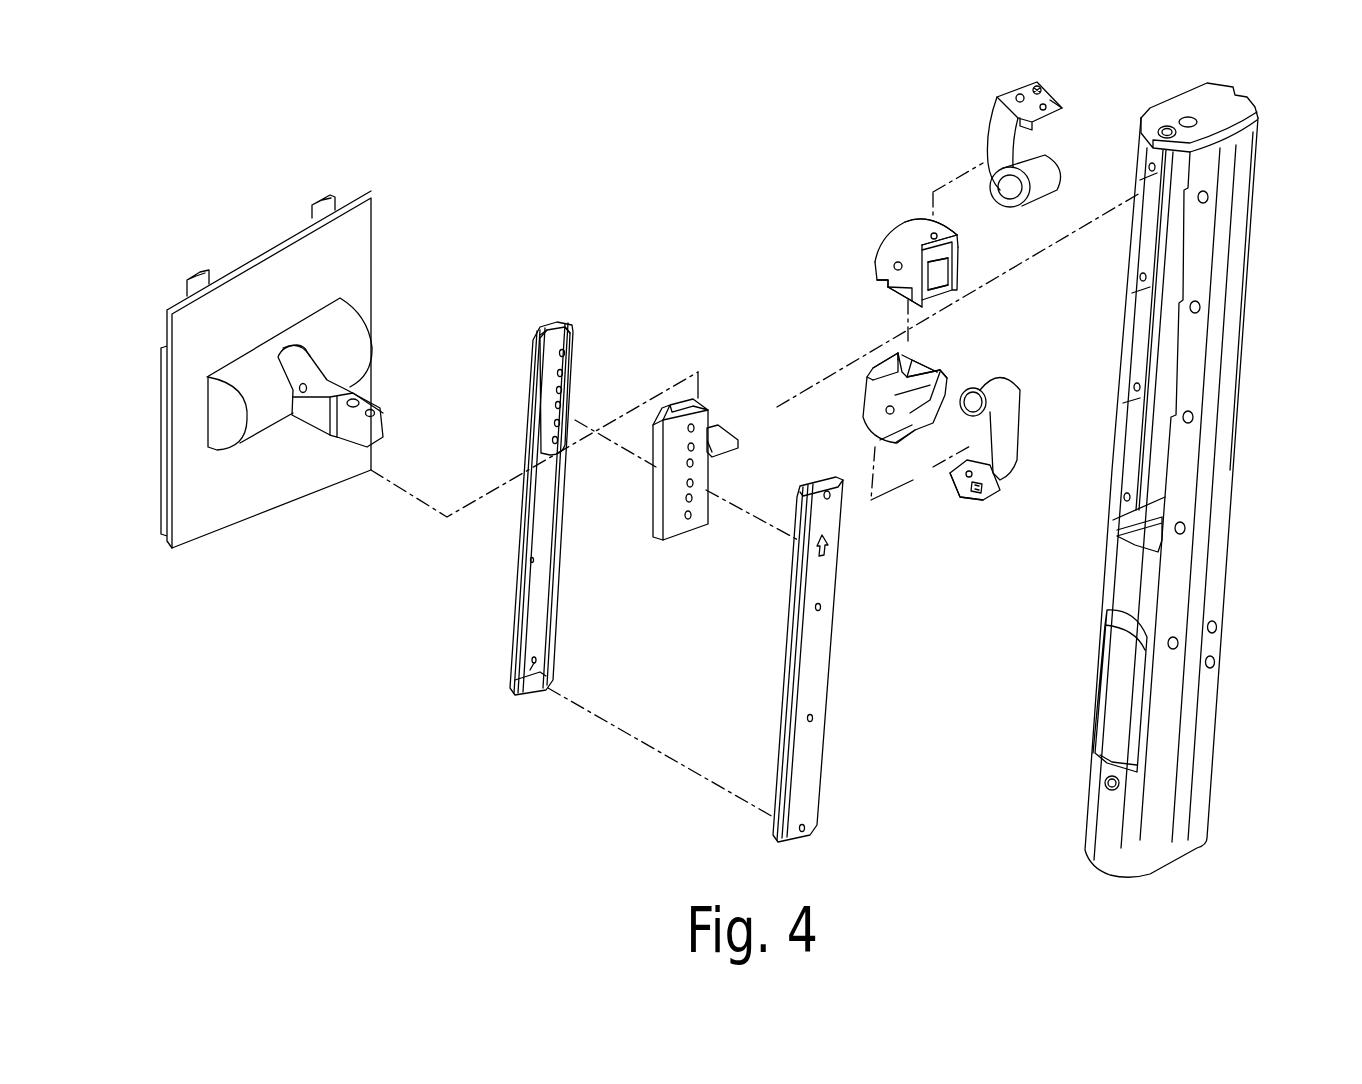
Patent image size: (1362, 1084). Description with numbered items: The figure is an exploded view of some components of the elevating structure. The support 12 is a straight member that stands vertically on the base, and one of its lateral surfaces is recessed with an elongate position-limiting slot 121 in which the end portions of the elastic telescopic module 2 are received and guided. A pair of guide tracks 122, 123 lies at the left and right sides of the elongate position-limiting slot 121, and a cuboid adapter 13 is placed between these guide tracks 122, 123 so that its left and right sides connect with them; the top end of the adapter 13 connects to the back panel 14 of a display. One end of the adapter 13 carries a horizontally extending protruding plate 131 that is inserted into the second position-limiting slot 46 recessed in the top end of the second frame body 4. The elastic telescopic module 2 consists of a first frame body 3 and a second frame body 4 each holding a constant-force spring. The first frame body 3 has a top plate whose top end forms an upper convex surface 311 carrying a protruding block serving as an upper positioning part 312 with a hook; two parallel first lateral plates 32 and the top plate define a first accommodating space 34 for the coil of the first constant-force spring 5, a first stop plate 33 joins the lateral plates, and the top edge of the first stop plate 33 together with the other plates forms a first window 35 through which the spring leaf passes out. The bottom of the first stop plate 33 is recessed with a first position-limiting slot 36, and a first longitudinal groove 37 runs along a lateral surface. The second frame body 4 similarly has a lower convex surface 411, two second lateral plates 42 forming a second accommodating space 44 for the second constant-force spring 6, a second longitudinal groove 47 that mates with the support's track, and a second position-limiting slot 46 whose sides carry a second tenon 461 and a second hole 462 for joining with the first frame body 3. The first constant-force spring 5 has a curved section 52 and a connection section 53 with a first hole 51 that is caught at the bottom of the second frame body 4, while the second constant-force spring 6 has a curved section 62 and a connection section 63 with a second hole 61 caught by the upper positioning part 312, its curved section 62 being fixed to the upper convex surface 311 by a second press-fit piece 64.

The elastic telescopic module 2 is at (902, 132).
The first frame body 3 is at (914, 242).
The upper convex surface 311 is at (928, 216).
The upper positioning part 312 is at (950, 232).
The first lateral plates 32 is at (892, 266).
The first stop plate 33 is at (910, 302).
The first accommodating space 34 is at (950, 260).
The first window 35 is at (955, 287).
The first position-limiting slot 36 is at (886, 283).
The first longitudinal groove 37 is at (937, 234).
The second frame body 4 is at (921, 435).
The lower convex surface 411 is at (905, 445).
The second lateral plates 42 is at (880, 420).
The second accommodating space 44 is at (980, 380).
The second position-limiting slot 46 is at (930, 348).
The second tenon 461 is at (883, 398).
The second hole 462 is at (882, 362).
The second longitudinal groove 47 is at (935, 365).
The first constant-force spring 5 is at (1012, 488).
The first hole 51 is at (966, 478).
The curved section 52 is at (985, 495).
The connection section 53 is at (955, 490).
The second constant-force spring 6 is at (1024, 121).
The second hole 61 is at (1046, 106).
The curved section 62 is at (1018, 94).
The connection section 63 is at (1056, 112).
The second press-fit piece 64 is at (1041, 88).
The support 12 is at (1215, 480).
The elongate position-limiting slot 121 is at (1180, 250).
The guide track 122 is at (520, 605).
The guide track 123 is at (812, 756).
The adapter 13 is at (704, 526).
The protruding plate 131 is at (736, 448).
The back panel 14 is at (362, 290).